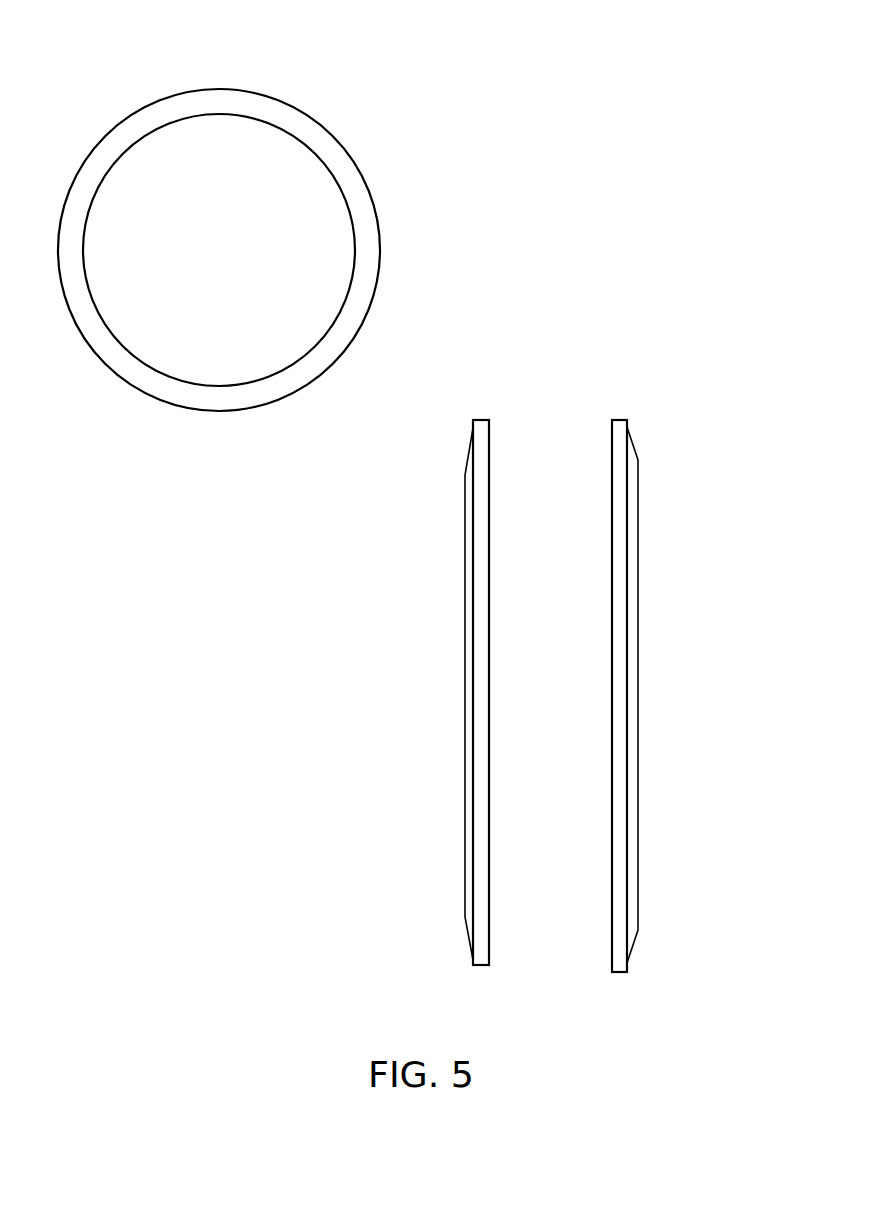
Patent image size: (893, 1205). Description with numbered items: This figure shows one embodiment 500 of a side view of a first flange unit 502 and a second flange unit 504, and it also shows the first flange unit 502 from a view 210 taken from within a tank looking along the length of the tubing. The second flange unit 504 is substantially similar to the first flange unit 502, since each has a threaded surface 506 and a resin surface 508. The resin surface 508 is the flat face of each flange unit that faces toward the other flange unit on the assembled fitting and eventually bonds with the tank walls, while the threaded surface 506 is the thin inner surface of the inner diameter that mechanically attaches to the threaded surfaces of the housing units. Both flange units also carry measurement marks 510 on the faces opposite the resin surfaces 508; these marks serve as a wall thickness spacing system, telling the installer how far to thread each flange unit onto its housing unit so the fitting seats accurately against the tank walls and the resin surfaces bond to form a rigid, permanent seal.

The view 210 is at (135, 78).
The threaded surface 506 is at (333, 322).
The measurement marks 510 is at (637, 447).
The resin surface 508 is at (610, 432).
The second flange unit 504 is at (437, 427).
The first flange unit 502 is at (667, 427).
The embodiment 500 is at (210, 842).